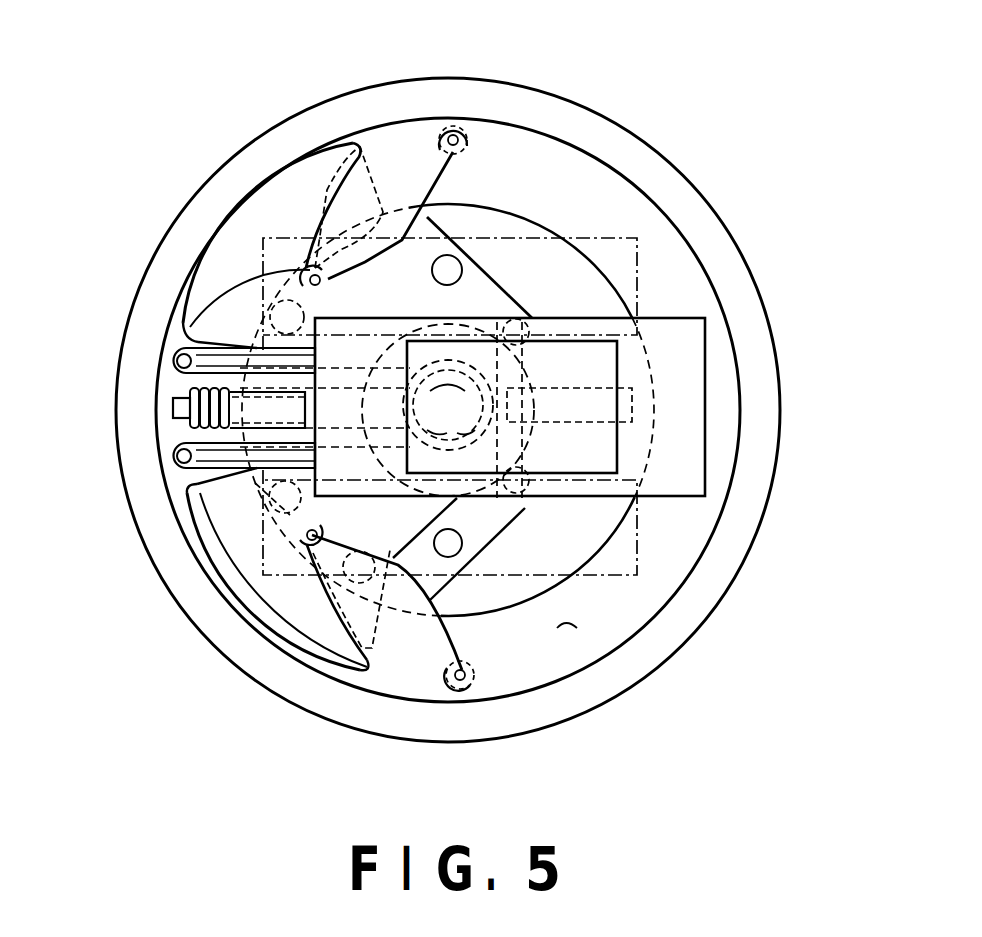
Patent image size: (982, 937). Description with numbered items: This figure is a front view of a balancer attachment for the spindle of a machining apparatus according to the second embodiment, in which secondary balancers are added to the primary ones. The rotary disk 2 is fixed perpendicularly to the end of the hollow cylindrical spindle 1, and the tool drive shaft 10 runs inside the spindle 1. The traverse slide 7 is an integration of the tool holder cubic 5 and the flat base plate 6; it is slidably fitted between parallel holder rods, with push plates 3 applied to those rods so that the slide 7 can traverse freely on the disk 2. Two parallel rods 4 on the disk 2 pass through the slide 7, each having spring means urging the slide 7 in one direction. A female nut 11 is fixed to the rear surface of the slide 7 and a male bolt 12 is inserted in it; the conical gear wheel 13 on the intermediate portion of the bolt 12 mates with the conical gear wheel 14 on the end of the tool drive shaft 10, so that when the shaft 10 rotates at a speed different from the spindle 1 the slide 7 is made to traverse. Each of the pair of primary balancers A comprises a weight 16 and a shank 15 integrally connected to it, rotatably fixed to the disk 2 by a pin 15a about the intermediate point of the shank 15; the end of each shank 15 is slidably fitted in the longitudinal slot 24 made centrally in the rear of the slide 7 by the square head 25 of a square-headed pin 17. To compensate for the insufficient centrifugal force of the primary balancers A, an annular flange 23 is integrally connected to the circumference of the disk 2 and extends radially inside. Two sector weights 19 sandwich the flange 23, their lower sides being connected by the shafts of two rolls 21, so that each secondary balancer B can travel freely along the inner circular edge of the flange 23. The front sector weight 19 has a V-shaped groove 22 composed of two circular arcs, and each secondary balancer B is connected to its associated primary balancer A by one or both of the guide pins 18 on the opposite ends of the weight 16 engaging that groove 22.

The hollow cylindrical spindle 1 is at (643, 353).
The rotary disk 2 is at (655, 166).
The push plates 3 is at (637, 265).
The parallel rods 4 is at (222, 352).
The tool holder cubic 5 is at (600, 362).
The flat base plate 6 is at (697, 362).
The traverse slide 7 is at (705, 380).
The tool drive shaft 10 is at (473, 423).
The female nut 11 is at (174, 455).
The male bolt 12 is at (173, 409).
The conical gear wheel 13 is at (443, 432).
The conical gear wheel 14 is at (462, 432).
The shank 15 is at (427, 217).
The pin 15a is at (505, 330).
The weight 16 is at (407, 150).
The square-headed pin 17 is at (547, 330).
The guide pins 18 is at (453, 125).
The sector weights 19 is at (262, 230).
The rolls 21 is at (320, 250).
The V-shaped groove 22 is at (245, 282).
The annular flange 23 is at (577, 628).
The longitudinal slot 24 is at (528, 440).
The square head 25 is at (520, 322).
The primary balancer A is at (375, 160).
The secondary balancer B is at (208, 301).